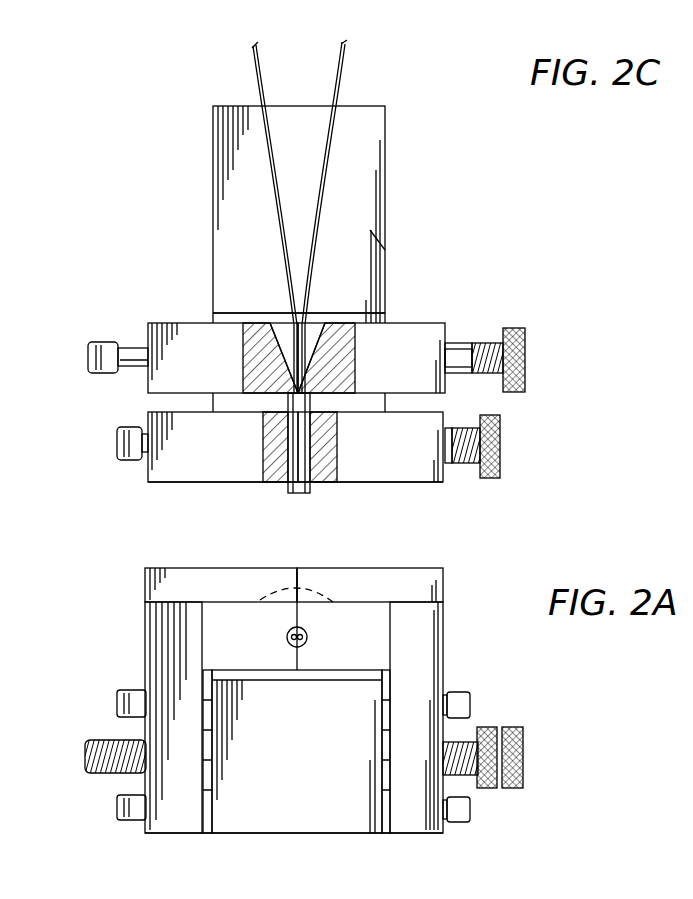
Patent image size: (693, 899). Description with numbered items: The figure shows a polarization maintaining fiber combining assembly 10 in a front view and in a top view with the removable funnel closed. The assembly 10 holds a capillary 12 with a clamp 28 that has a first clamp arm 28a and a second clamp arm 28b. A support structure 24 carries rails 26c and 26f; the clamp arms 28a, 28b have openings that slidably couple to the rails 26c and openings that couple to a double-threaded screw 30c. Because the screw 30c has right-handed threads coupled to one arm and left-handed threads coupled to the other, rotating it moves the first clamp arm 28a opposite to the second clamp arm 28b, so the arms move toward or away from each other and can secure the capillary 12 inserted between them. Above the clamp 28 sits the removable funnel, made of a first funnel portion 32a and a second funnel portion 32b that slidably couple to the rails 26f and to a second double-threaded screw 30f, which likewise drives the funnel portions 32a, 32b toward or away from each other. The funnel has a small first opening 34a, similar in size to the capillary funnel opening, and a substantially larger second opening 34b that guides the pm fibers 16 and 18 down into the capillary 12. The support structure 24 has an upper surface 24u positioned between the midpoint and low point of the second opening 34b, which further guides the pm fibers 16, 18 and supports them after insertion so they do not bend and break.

In FIG. 2C, the pm fiber combining assembly 10 is at (455, 87).
In FIG. 2A, the pm fiber combining assembly 10 is at (500, 585).
In FIG. 2C, the capillary 12 is at (300, 493).
In FIG. 2A, the capillary 12 is at (305, 630).
In FIG. 2C, the pm fiber 16 is at (252, 62).
In FIG. 2A, the pm fiber 16 is at (286, 639).
In FIG. 2C, the pm fiber 18 is at (343, 62).
In FIG. 2A, the pm fiber 18 is at (306, 641).
In FIG. 2C, the support structure 24 is at (394, 139).
In FIG. 2A, the support structure 24 is at (330, 833).
In FIG. 2C, the upper surface 24u is at (386, 240).
In FIG. 2C, the rail 26c is at (462, 463).
In FIG. 2A, the rail 26c is at (462, 692).
In FIG. 2C, the rail 26f is at (465, 345).
In FIG. 2A, the rail 26f is at (470, 700).
In FIG. 2C, the clamp 28 is at (137, 502).
In FIG. 2A, the clamp 28 is at (104, 858).
In FIG. 2C, the first clamp arm 28a is at (205, 482).
In FIG. 2A, the first clamp arm 28a is at (145, 632).
In FIG. 2C, the second clamp arm 28b is at (390, 482).
In FIG. 2A, the second clamp arm 28b is at (444, 645).
In FIG. 2C, the double-threaded screw 30c is at (502, 446).
In FIG. 2A, the double-threaded screw 30c is at (490, 730).
In FIG. 2C, the double-threaded screw 30f is at (526, 358).
In FIG. 2A, the double-threaded screw 30f is at (525, 755).
In FIG. 2C, the first funnel portion 32a is at (178, 323).
In FIG. 2A, the first funnel portion 32a is at (204, 568).
In FIG. 2C, the second funnel portion 32b is at (423, 323).
In FIG. 2A, the second funnel portion 32b is at (410, 568).
In FIG. 2C, the first opening 34a is at (322, 372).
In FIG. 2C, the second opening 34b is at (342, 323).
In FIG. 2A, the second opening 34b is at (312, 590).